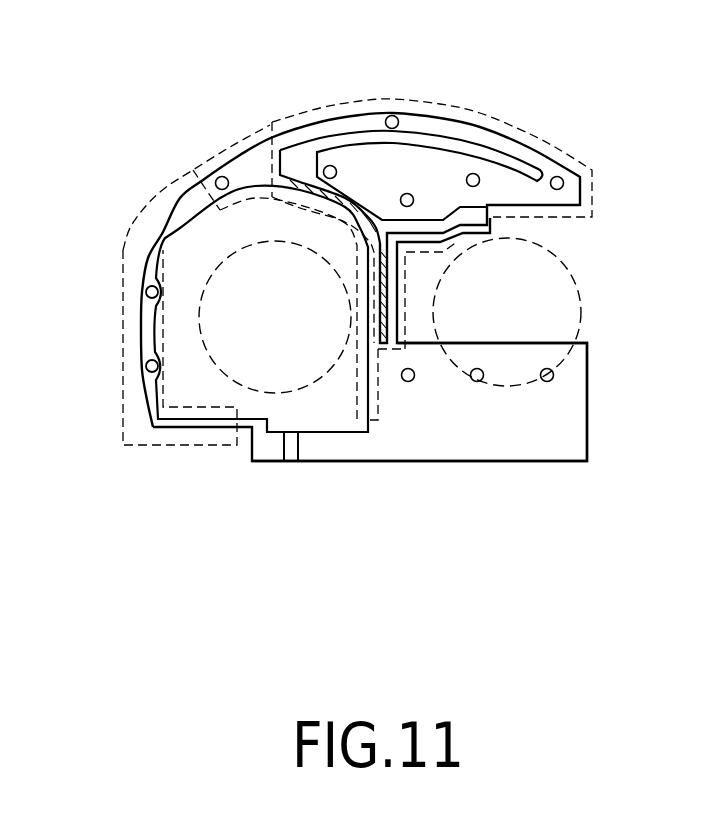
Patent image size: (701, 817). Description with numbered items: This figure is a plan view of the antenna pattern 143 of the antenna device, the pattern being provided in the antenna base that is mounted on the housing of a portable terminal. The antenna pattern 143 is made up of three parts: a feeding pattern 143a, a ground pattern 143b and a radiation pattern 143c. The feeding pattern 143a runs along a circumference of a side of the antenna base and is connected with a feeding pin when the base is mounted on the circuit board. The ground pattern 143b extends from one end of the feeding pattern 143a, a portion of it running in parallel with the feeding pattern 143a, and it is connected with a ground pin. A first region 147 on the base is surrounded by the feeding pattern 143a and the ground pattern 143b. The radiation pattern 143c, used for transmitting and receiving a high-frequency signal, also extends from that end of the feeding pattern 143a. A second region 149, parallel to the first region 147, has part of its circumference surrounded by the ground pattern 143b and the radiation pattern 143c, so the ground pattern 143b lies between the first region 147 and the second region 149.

The antenna pattern 143 is at (143, 54).
The feeding pattern 143a is at (125, 365).
The ground pattern 143b is at (380, 402).
The radiation pattern 143c is at (402, 98).
The first region 147 is at (218, 265).
The second region 149 is at (580, 308).